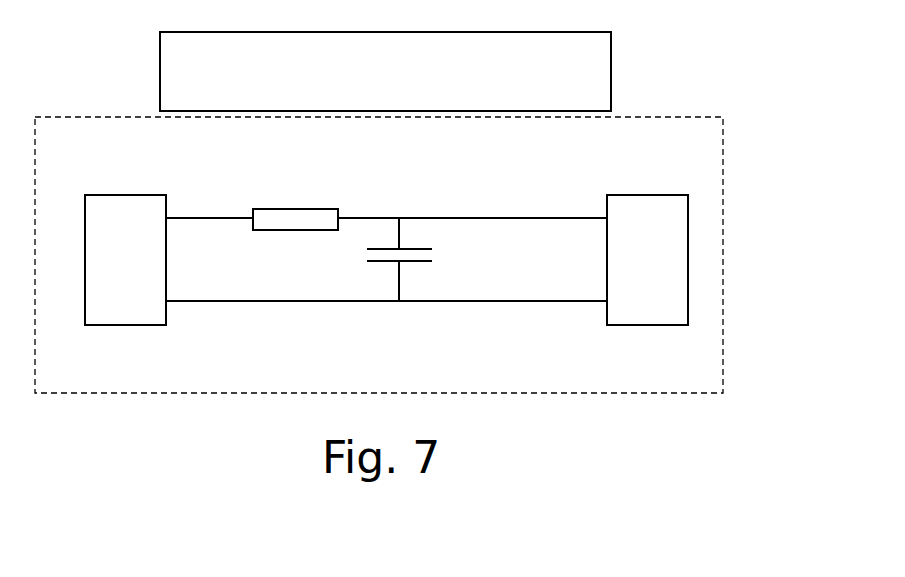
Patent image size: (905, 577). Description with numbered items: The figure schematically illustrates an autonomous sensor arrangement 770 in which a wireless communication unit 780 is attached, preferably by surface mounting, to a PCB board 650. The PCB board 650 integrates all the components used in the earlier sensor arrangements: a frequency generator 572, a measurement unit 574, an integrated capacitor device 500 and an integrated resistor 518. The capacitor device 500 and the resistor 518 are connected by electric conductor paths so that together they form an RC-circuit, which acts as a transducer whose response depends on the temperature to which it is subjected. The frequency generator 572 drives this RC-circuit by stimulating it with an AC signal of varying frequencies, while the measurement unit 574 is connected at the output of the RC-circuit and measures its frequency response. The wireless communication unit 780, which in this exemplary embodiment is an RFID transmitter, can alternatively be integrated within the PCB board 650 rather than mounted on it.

The wireless communication unit 780 is at (611, 72).
The autonomous sensor arrangement 770 is at (748, 80).
The PCB board 650 is at (583, 393).
The frequency generator 572 is at (148, 272).
The measurement unit 574 is at (670, 272).
The integrated resistor 518 is at (295, 208).
The integrated capacitor device 500 is at (420, 240).